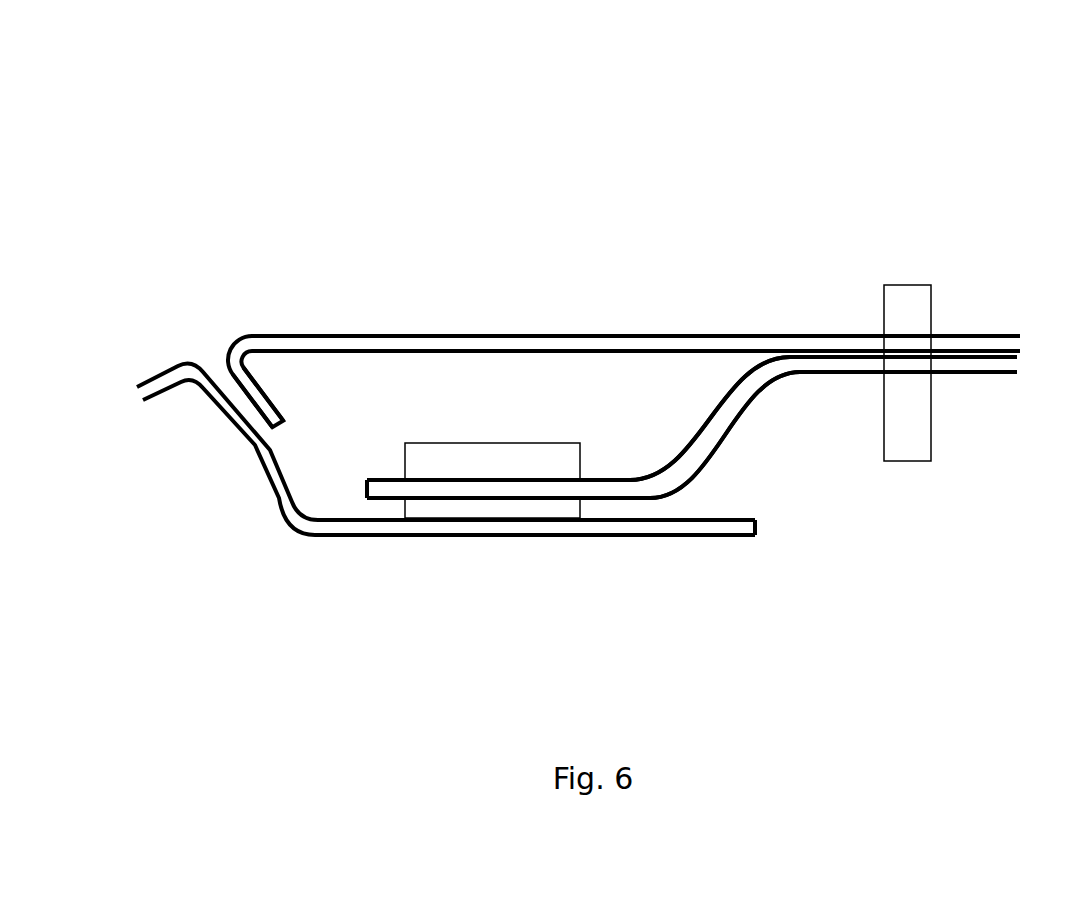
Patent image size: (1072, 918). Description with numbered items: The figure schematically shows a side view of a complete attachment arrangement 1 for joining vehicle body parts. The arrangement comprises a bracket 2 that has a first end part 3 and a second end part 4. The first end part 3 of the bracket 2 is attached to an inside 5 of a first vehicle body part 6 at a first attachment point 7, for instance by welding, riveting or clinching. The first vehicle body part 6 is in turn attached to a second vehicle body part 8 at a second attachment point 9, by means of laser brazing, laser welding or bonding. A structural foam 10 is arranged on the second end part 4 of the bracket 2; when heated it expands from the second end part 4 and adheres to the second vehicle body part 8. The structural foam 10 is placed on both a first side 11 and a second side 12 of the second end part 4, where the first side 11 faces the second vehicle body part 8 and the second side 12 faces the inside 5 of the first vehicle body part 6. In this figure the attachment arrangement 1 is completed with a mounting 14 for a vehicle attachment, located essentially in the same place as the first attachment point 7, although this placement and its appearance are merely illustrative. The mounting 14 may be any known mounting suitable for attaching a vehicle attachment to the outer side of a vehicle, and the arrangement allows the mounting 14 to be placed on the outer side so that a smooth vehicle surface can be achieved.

The attachment arrangement 1 is at (257, 202).
The bracket 2 is at (753, 395).
The first end part 3 is at (945, 373).
The second end part 4 is at (389, 477).
The inside 5 is at (687, 355).
The first vehicle body part 6 is at (647, 335).
The first attachment point 7 is at (957, 348).
The second vehicle body part 8 is at (278, 513).
The second attachment point 9 is at (243, 408).
The structural foam 10 is at (485, 503).
The first side 11 is at (388, 499).
The second side 12 is at (602, 477).
The mounting 14 is at (901, 283).